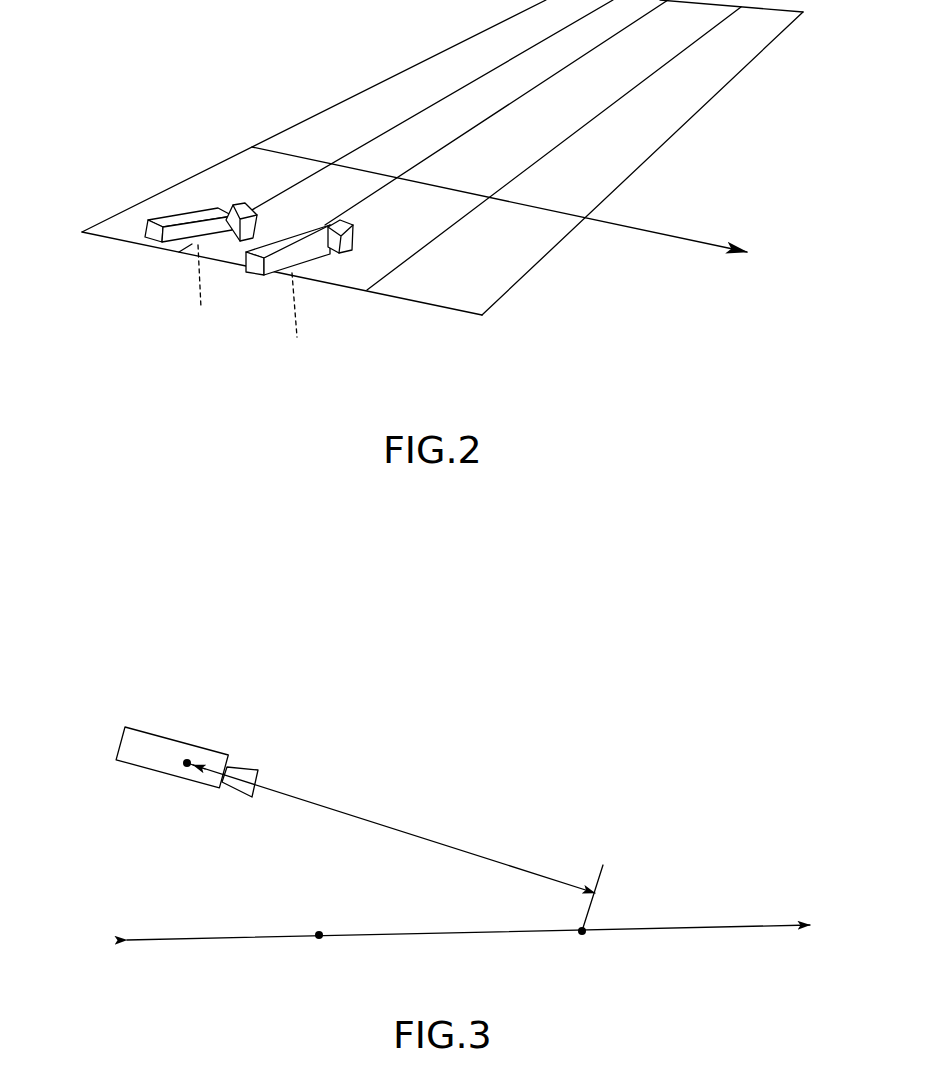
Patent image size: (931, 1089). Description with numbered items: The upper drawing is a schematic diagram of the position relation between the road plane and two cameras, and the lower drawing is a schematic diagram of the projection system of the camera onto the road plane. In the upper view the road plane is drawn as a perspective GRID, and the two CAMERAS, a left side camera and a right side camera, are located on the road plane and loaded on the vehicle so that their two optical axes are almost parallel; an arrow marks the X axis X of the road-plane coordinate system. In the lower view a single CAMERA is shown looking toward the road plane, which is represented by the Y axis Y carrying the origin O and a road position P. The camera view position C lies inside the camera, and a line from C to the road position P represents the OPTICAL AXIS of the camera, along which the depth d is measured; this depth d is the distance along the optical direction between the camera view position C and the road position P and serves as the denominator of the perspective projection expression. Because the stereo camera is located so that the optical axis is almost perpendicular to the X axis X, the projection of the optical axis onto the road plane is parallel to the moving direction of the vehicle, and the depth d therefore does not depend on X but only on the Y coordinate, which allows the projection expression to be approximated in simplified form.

In FIG. 2, the road plane GRID is at (442, 157).
In FIG. 2, the X axis X is at (510, 207).
In FIG. 2, the two cameras CAMERAS is at (240, 273).
In FIG. 3, the camera CAMERA is at (151, 767).
In FIG. 3, the optical axis OPTICAL AXIS is at (523, 868).
In FIG. 3, the camera view position C is at (176, 756).
In FIG. 3, the depth d is at (416, 820).
In FIG. 3, the Y axis Y is at (478, 936).
In FIG. 3, the origin O is at (314, 951).
In FIG. 3, the road position P is at (581, 946).